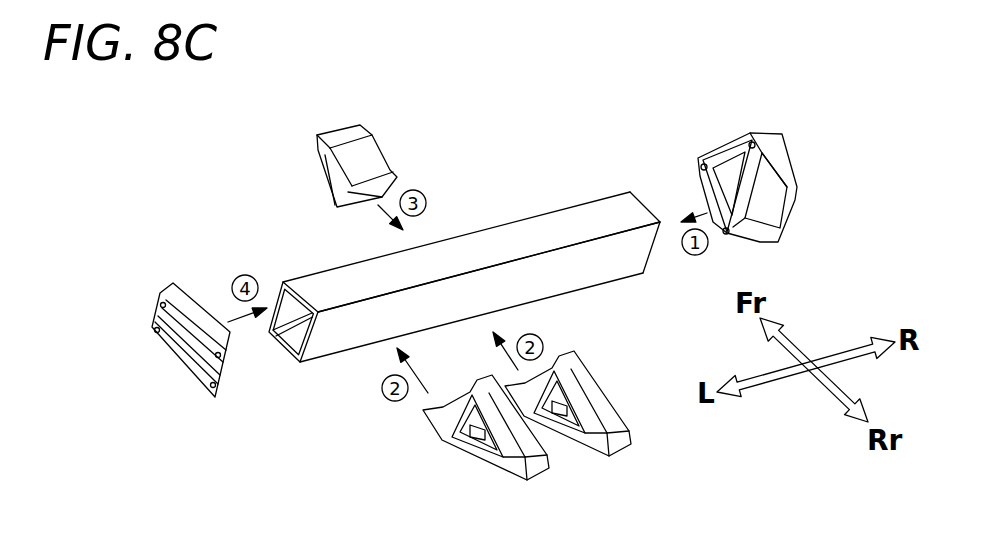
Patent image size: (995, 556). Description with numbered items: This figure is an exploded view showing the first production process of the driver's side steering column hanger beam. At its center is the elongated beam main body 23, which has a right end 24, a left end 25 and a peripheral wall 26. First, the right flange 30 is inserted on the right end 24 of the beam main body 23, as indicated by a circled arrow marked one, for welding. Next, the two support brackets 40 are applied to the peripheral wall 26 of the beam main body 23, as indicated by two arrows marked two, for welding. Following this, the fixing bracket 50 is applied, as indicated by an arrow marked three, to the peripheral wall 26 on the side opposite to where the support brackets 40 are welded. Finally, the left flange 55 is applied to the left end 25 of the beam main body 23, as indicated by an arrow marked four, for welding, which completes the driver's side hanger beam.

The beam main body 23 is at (456, 225).
The right end 24 is at (618, 212).
The left end 25 is at (303, 290).
The peripheral wall 26 is at (473, 248).
The right flange 30 is at (730, 150).
The support bracket 40 is at (477, 458).
The fixing bracket 50 is at (378, 152).
The left flange 55 is at (188, 375).